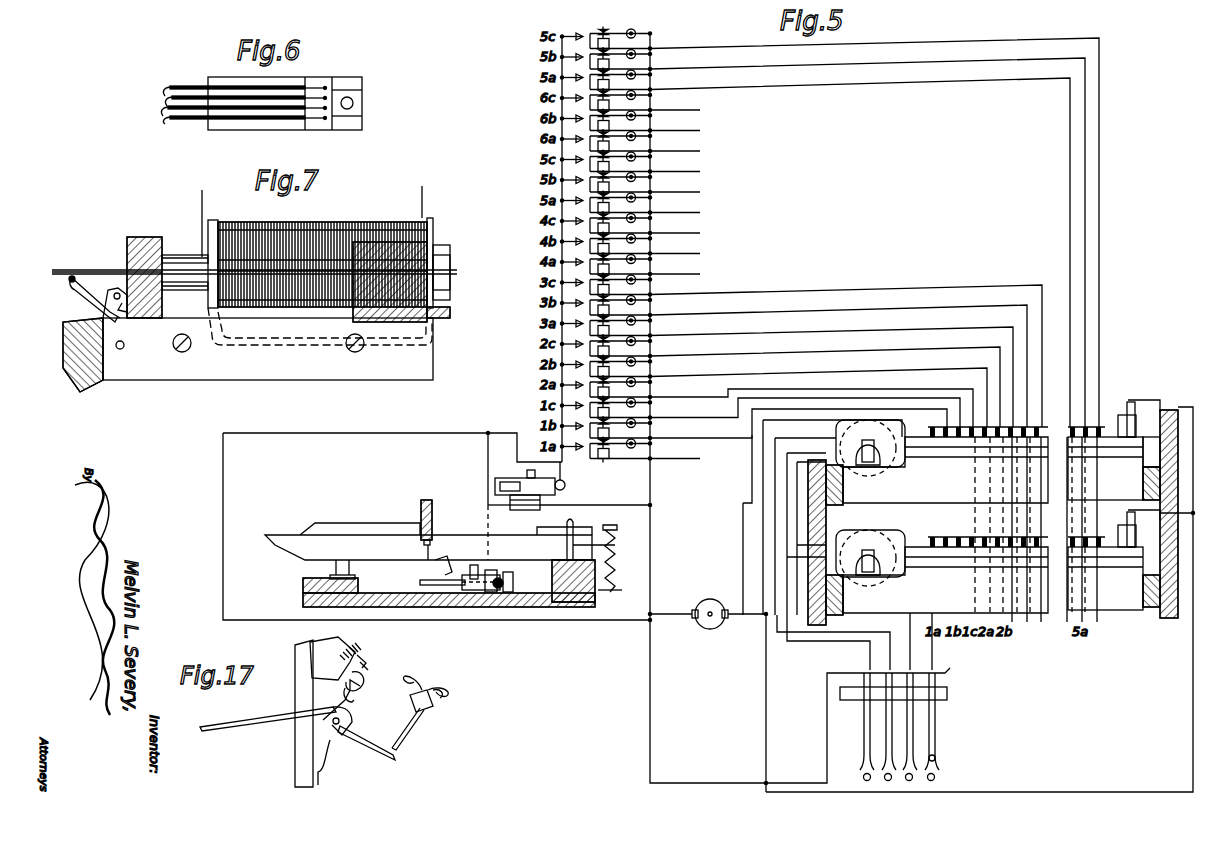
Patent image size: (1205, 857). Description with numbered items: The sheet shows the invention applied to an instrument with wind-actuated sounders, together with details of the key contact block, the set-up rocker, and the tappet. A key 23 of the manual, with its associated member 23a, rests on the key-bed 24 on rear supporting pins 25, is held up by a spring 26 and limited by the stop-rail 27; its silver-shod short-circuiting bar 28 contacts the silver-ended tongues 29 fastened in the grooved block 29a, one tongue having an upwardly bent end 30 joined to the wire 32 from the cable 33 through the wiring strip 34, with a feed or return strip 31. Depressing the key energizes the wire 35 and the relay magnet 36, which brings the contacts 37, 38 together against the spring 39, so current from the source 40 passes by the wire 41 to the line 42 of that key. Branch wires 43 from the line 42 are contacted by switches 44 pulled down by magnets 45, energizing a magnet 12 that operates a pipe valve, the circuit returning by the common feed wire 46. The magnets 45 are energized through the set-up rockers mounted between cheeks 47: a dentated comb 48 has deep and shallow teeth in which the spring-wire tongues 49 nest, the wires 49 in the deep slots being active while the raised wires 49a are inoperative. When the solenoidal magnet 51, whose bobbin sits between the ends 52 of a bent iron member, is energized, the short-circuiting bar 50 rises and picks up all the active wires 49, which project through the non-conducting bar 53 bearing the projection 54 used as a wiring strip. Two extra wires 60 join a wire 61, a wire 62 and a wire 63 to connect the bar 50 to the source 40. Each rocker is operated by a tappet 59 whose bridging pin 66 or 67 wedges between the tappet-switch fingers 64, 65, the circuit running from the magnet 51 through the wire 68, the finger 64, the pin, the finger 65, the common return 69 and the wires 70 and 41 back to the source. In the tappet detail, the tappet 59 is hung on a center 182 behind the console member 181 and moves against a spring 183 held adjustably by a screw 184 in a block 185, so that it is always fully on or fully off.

In FIG. 5, the magnet 12 is at (655, 117).
In FIG. 5, the key 23 is at (275, 533).
In FIG. 5, the lever bar 23a is at (360, 522).
In FIG. 5, the key-bed 24 is at (303, 592).
In FIG. 5, the rear supporting pin 25 is at (575, 520).
In FIG. 5, the spring 26 is at (616, 566).
In FIG. 5, the stop-rail 27 is at (427, 500).
In FIG. 5, the short-circuiting or contacting bar 28 is at (435, 570).
In FIG. 6, the silver-ended tongue 29 is at (174, 96).
In FIG. 5, the silver-ended tongue 29 is at (428, 588).
In FIG. 6, the grooved block 29a is at (253, 118).
In FIG. 5, the grooved block 29a is at (440, 575).
In FIG. 5, the upwardly bent end of tongue 30 is at (466, 574).
In FIG. 5, the feed or return strip 31 is at (500, 578).
In FIG. 5, the wire 32 is at (488, 593).
In FIG. 5, the cable 33 is at (520, 593).
In FIG. 5, the wiring strip 34 is at (510, 593).
In FIG. 5, the wire 35 is at (537, 520).
In FIG. 5, the relay magnet 36 is at (510, 498).
In FIG. 5, the relay contact 37 is at (535, 462).
In FIG. 5, the relay contact 38 is at (565, 487).
In FIG. 5, the spring 39 is at (500, 478).
In FIG. 5, the source of current 40 is at (705, 600).
In FIG. 5, the wire 41 is at (333, 433).
In FIG. 5, the wire or line 42 is at (562, 347).
In FIG. 5, the branch wire 43 is at (562, 38).
In FIG. 5, the switch 44 is at (650, 222).
In FIG. 5, the magnet 45 is at (650, 204).
In FIG. 5, the common return or feed wire 46 is at (655, 158).
In FIG. 5, the cheek 47 is at (806, 480).
In FIG. 7, the comb or dentated strip 48 is at (142, 237).
In FIG. 5, the comb or dentated strip 48 is at (920, 430).
In FIG. 7, the conducting wire or spring tongue 49 is at (76, 270).
In FIG. 5, the conducting wire or spring tongue 49 is at (982, 287).
In FIG. 5, the conducting wire or spring tongue 49a is at (955, 427).
In FIG. 7, the short-circuiting member or bar 50 is at (74, 292).
In FIG. 5, the short-circuiting member or bar 50 is at (882, 468).
In FIG. 7, the solenoidal magnet 51 is at (350, 230).
In FIG. 5, the solenoidal magnet 51 is at (866, 420).
In FIG. 7, the end of rectangularly bent iron member 52 is at (213, 222).
In FIG. 5, the end of rectangularly bent iron member 52 is at (836, 435).
In FIG. 7, the non-conducting bar 53 is at (430, 248).
In FIG. 5, the non-conducting bar 53 is at (1125, 612).
In FIG. 7, the longitudinally-extending projection 54 is at (440, 314).
In FIG. 17, the tappet 59 is at (246, 720).
In FIG. 5, the extra wire 60 is at (1128, 415).
In FIG. 5, the wire 61 is at (1150, 400).
In FIG. 5, the wire 62 is at (750, 711).
In FIG. 7, the wire 63 is at (202, 202).
In FIG. 5, the wire 63 is at (763, 445).
In FIG. 5, the tappet-switch finger 64 is at (864, 744).
In FIG. 17, the tappet-switch finger 65 is at (418, 714).
In FIG. 5, the tappet-switch finger 65 is at (862, 717).
In FIG. 17, the bridging pin 66 is at (398, 748).
In FIG. 5, the bridging pin 66 is at (863, 777).
In FIG. 5, the bridging pin 67 is at (936, 758).
In FIG. 17, the wire 68 is at (448, 693).
In FIG. 5, the wire 68 is at (845, 650).
In FIG. 5, the common return 69 is at (945, 675).
In FIG. 5, the wire 70 is at (653, 692).
In FIG. 17, the console member 181 is at (297, 757).
In FIG. 17, the center 182 is at (343, 735).
In FIG. 17, the spring 183 is at (358, 692).
In FIG. 17, the screw 184 is at (365, 666).
In FIG. 17, the block 185 is at (318, 640).